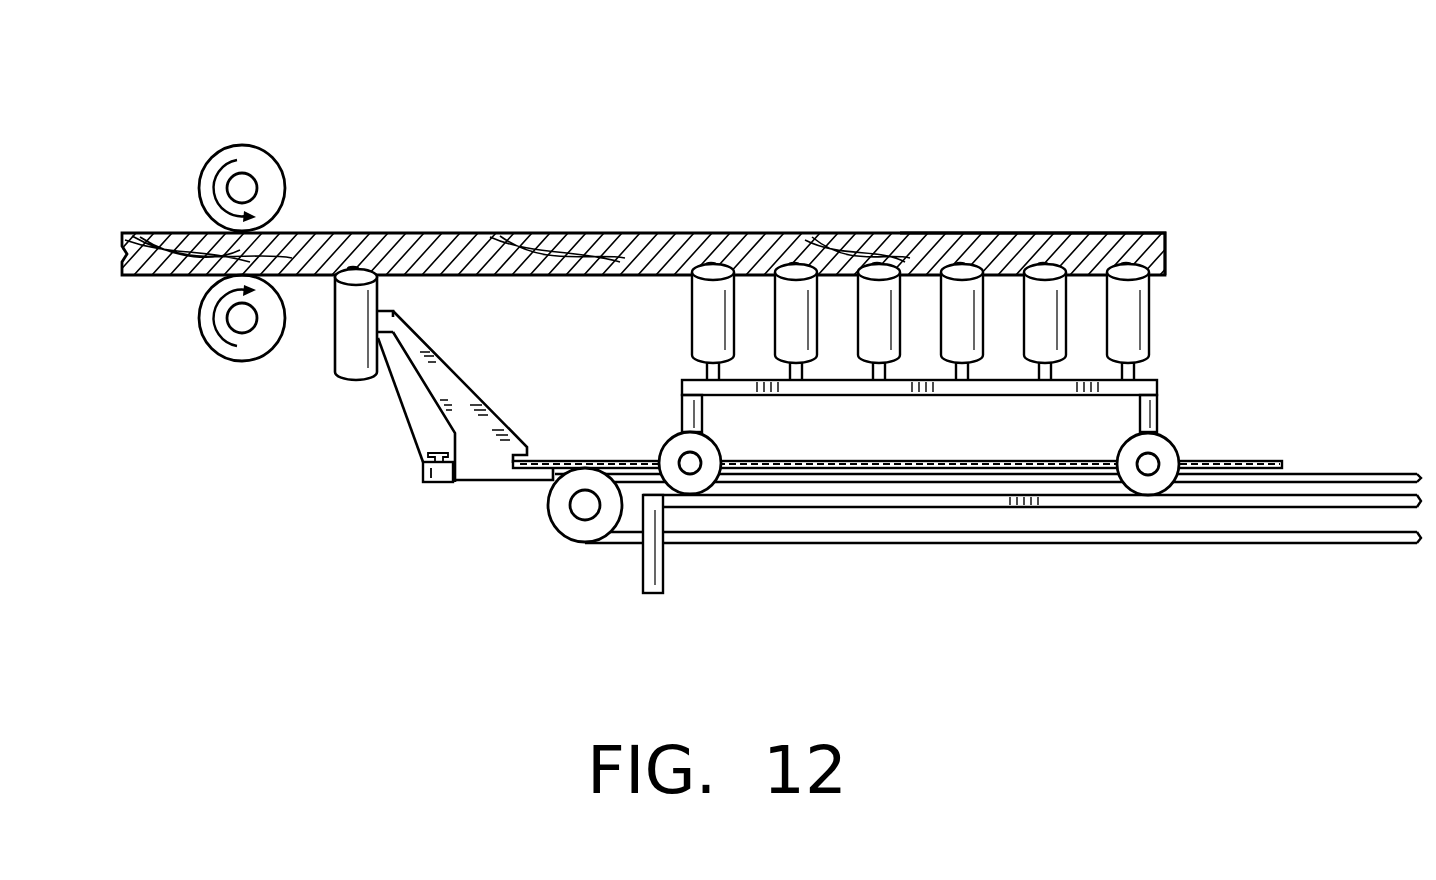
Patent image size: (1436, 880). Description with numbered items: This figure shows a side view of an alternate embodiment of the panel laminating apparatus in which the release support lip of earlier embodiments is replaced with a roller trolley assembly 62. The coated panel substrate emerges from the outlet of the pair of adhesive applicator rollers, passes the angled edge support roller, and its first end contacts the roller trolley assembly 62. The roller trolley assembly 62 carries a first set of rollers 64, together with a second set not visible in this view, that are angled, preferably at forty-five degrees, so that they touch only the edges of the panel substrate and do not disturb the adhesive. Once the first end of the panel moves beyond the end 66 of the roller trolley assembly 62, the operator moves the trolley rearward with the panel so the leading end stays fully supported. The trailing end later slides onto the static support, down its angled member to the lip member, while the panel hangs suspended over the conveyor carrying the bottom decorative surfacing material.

The roller trolley assembly 62 is at (1160, 413).
The first set of rollers 64 is at (1153, 312).
The end 66 is at (1168, 350).